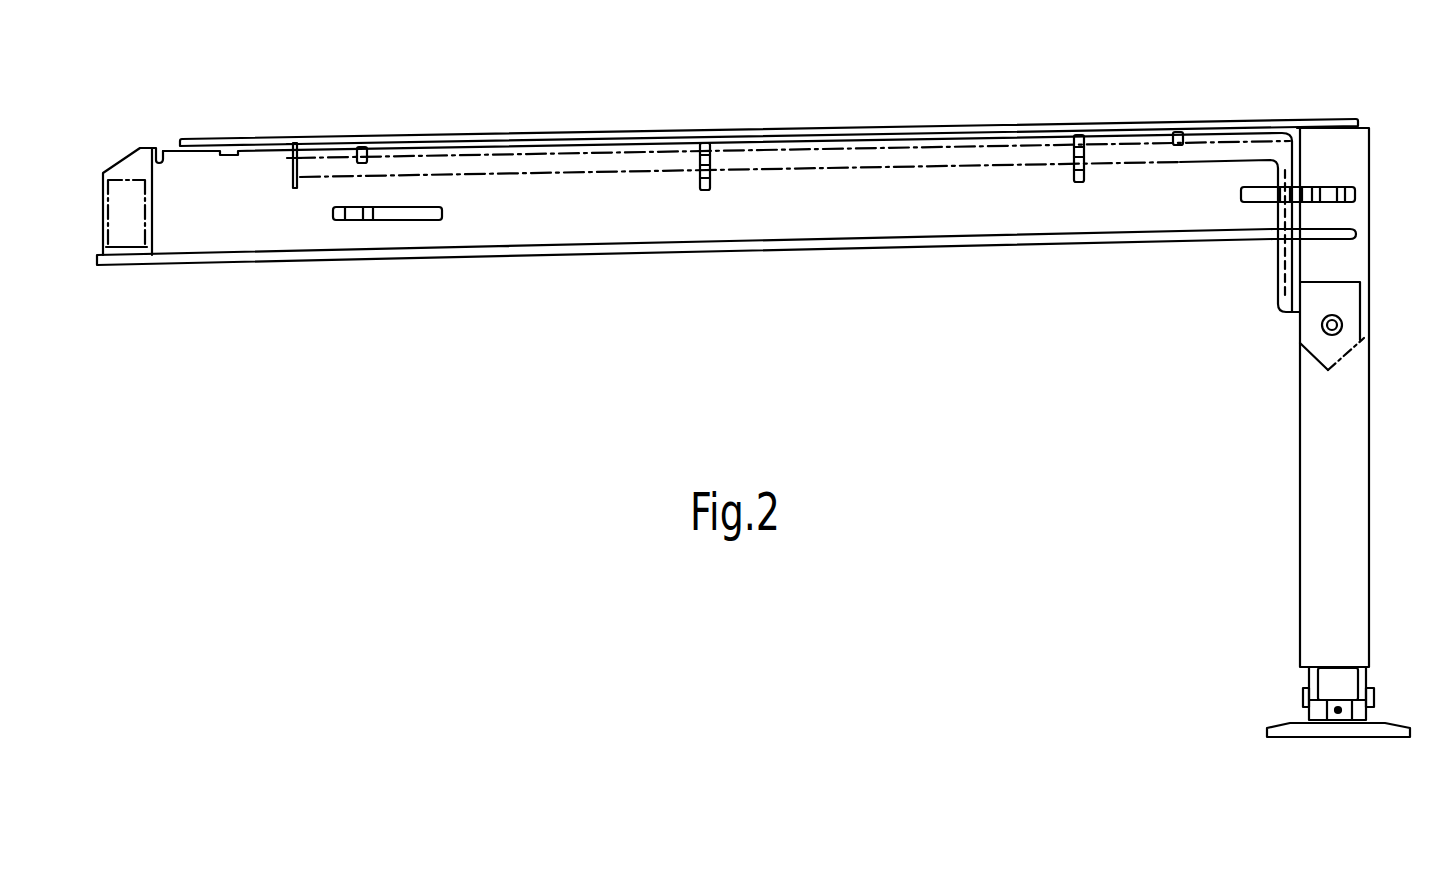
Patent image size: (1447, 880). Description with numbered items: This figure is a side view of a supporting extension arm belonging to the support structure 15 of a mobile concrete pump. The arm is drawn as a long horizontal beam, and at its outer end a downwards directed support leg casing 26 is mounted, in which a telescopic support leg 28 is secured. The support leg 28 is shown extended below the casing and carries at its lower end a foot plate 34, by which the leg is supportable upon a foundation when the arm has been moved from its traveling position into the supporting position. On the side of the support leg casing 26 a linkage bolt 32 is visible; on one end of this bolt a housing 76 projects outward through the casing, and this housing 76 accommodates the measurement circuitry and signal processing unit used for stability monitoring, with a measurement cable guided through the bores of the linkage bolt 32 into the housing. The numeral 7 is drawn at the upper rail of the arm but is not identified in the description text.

The cross beam 7 is at (1325, 120).
The support structure 15 is at (860, 208).
The support leg casing 26 is at (1345, 433).
The telescopic support leg 28 is at (1335, 682).
The linkage bolt 32 is at (1343, 318).
The foot plate 34 is at (1323, 730).
The housing 76 is at (1342, 327).